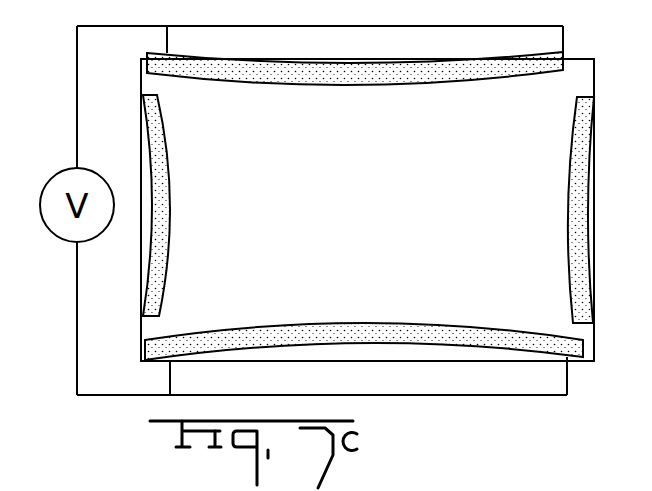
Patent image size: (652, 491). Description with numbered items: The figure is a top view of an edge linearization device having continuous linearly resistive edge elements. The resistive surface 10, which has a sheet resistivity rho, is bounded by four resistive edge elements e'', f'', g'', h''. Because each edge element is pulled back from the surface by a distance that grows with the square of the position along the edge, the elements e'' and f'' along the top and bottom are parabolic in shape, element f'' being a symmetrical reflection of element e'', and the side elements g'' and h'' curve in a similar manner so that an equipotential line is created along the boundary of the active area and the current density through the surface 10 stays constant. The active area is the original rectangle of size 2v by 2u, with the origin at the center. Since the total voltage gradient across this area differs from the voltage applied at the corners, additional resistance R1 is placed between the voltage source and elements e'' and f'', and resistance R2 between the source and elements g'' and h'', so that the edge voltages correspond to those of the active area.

The resistive surface 10 is at (367, 210).
The resistive edge element e'' is at (355, 57).
The resistive edge element f'' is at (364, 360).
The resistive edge element g'' is at (139, 205).
The resistive edge element h'' is at (599, 201).
The height dimension of the active area 2u is at (476, 95).
The width dimension of the active area 2v is at (169, 288).